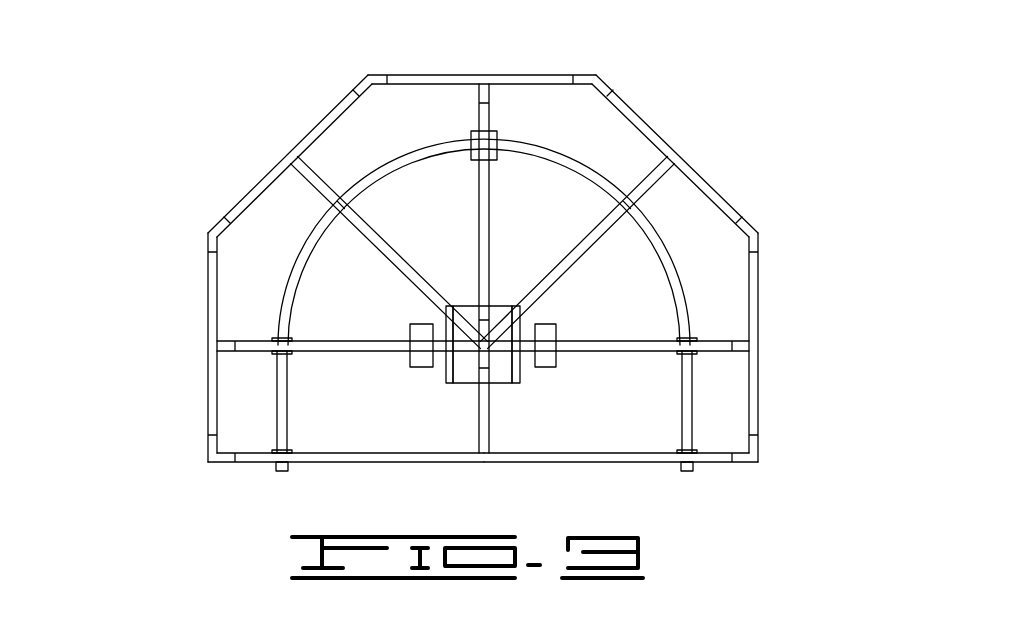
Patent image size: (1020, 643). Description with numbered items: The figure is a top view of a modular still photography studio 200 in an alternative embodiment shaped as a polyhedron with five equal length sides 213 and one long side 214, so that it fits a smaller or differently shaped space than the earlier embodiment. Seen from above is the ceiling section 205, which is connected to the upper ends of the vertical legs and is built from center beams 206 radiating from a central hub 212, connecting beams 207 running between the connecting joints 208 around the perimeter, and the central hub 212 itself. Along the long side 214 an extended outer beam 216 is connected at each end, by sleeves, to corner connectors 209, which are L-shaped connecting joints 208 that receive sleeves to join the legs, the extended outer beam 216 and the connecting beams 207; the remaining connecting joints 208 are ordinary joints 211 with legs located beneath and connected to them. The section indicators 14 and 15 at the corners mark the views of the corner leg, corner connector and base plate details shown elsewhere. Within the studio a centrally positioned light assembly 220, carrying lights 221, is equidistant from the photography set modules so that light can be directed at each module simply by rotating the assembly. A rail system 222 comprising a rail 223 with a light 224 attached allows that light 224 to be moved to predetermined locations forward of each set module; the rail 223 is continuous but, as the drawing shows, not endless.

The modular still photography studio 200 is at (493, 269).
The ceiling section 205 is at (568, 232).
The center beams 206 is at (583, 243).
The connecting beams 207 is at (705, 180).
The connecting joints 208 is at (493, 246).
The corner connectors 209 is at (210, 448).
The joints 211 is at (603, 75).
The central hub 212 is at (494, 352).
The equal length sides 213 is at (285, 157).
The long side 214 is at (453, 463).
The extended outer beam 216 is at (582, 463).
The light assembly 220 is at (516, 326).
The lights 221 is at (420, 325).
The rail system 222 is at (534, 221).
The rail 223 is at (588, 168).
The light 224 is at (472, 134).
The section line 14- 14 is at (208, 543).
The section line 15- 15 is at (83, 417).